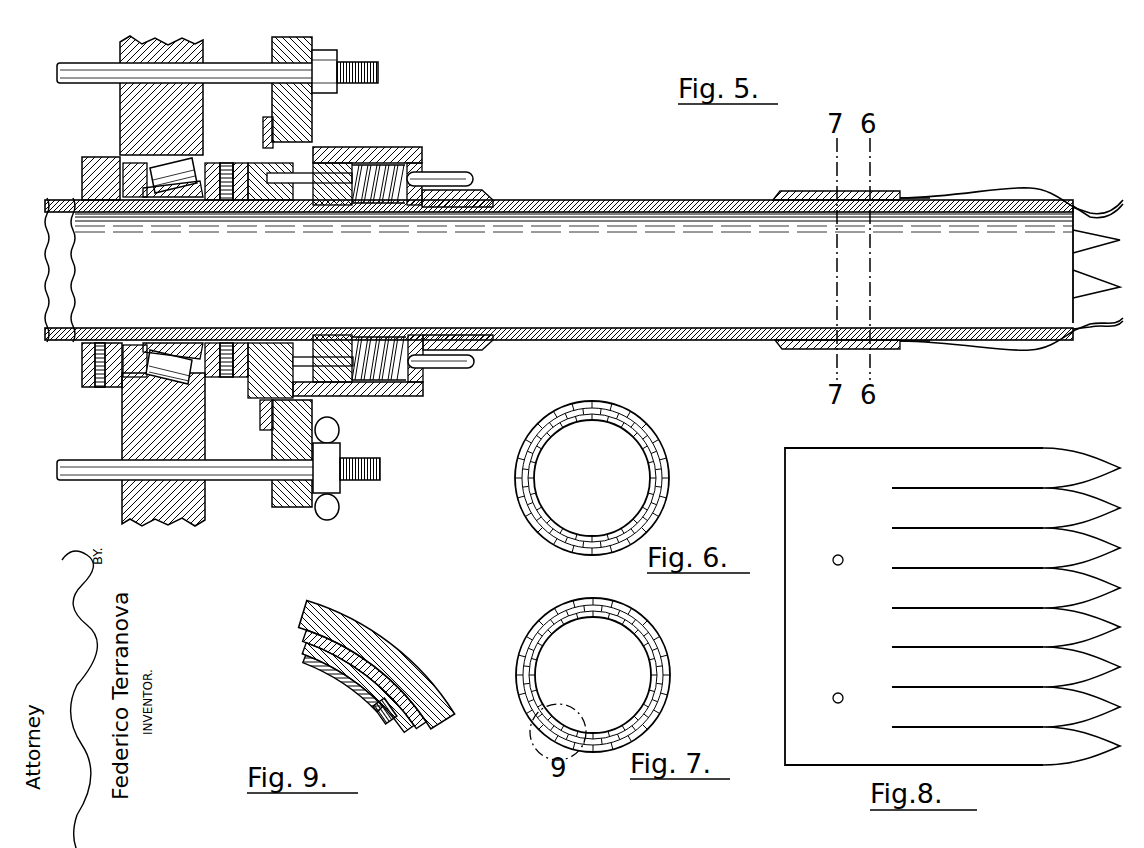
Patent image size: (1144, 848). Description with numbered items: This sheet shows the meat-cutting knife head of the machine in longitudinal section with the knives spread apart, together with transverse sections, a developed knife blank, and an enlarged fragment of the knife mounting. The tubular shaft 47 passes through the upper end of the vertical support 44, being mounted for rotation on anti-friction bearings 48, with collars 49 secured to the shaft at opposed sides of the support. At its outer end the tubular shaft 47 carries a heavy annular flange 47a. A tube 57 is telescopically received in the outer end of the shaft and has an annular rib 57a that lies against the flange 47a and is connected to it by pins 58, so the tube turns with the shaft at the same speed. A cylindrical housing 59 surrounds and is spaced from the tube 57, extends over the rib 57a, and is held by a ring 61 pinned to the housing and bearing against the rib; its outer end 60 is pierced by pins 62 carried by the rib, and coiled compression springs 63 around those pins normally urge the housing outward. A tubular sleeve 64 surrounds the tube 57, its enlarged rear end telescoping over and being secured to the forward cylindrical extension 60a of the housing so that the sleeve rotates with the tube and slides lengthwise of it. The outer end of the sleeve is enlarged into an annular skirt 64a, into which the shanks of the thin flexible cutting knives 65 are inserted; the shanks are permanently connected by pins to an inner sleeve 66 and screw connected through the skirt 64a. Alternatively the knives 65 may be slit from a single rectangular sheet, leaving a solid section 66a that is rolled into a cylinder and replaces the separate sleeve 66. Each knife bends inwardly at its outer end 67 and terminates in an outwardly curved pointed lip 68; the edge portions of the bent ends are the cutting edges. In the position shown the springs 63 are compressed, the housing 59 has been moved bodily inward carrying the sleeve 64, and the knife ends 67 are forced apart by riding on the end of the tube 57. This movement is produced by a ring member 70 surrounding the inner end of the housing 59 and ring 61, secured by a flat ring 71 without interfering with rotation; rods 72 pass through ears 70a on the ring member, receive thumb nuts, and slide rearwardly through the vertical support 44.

In FIG. 5, the vertical support 44 is at (123, 405).
In FIG. 5, the tubular shaft 47 is at (55, 200).
In FIG. 5, the annular flange 47a is at (253, 163).
In FIG. 5, the anti-friction bearings 48 is at (148, 160).
In FIG. 5, the collars 49 is at (82, 360).
In FIG. 5, the tube 57 is at (153, 213).
In FIG. 6, the tube 57 is at (630, 437).
In FIG. 7, the tube 57 is at (647, 630).
In FIG. 9, the tube 57 is at (347, 654).
In FIG. 5, the annular rib 57a is at (330, 213).
In FIG. 5, the pins 58 is at (262, 210).
In FIG. 5, the cylindrical housing 59 is at (365, 395).
In FIG. 5, the outer end 60 is at (428, 375).
In FIG. 5, the forward cylindrical extension 60a is at (446, 210).
In FIG. 5, the ring 61 is at (262, 403).
In FIG. 5, the pins 62 is at (443, 173).
In FIG. 5, the coiled compression springs 63 is at (387, 160).
In FIG. 5, the tubular sleeve 64 is at (620, 207).
In FIG. 5, the annular skirt 64a is at (813, 347).
In FIG. 6, the annular skirt 64a is at (535, 530).
In FIG. 7, the annular skirt 64a is at (657, 628).
In FIG. 9, the annular skirt 64a is at (302, 678).
In FIG. 5, the cutting knives 65 is at (930, 200).
In FIG. 6, the cutting knives 65 is at (560, 423).
In FIG. 7, the cutting knives 65 is at (525, 633).
In FIG. 9, the cutting knives 65 is at (292, 652).
In FIG. 8, the cutting knives 65 is at (1013, 542).
In FIG. 5, the sleeve 66 is at (793, 327).
In FIG. 6, the sleeve 66 is at (535, 473).
In FIG. 7, the sleeve 66 is at (615, 617).
In FIG. 9, the sleeve 66 is at (357, 690).
In FIG. 8, the solid section 66a is at (822, 607).
In FIG. 5, the inwardly bent outer end 67 is at (1075, 203).
In FIG. 5, the outwardly curved pointed lip 68 is at (1108, 237).
In FIG. 5, the ring member 70 is at (305, 117).
In FIG. 5, the ears 70a is at (287, 507).
In FIG. 5, the flat ring 71 is at (263, 118).
In FIG. 5, the rods 72 is at (217, 76).